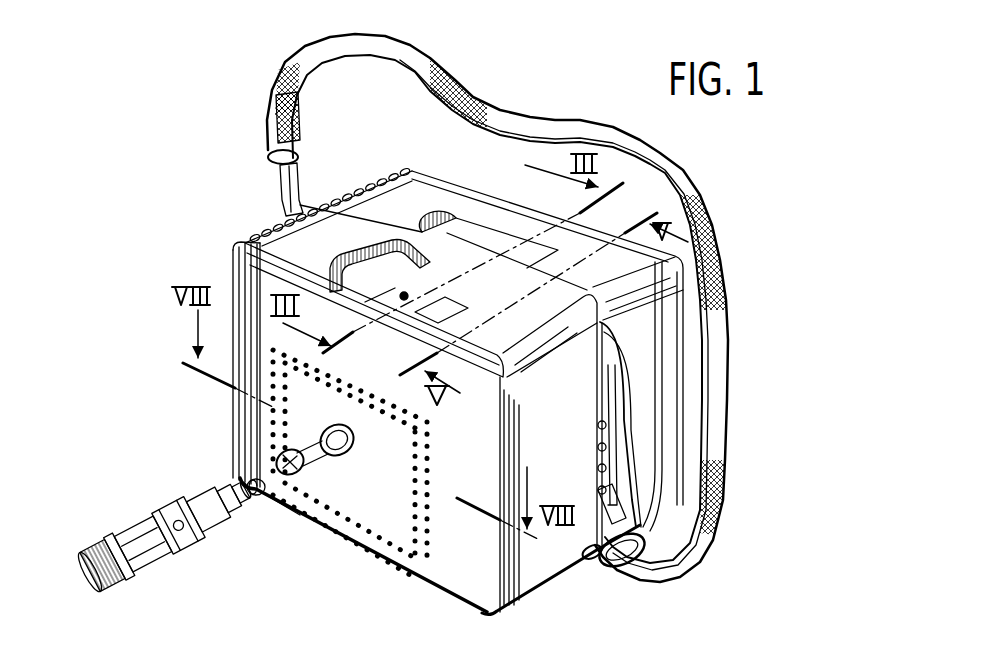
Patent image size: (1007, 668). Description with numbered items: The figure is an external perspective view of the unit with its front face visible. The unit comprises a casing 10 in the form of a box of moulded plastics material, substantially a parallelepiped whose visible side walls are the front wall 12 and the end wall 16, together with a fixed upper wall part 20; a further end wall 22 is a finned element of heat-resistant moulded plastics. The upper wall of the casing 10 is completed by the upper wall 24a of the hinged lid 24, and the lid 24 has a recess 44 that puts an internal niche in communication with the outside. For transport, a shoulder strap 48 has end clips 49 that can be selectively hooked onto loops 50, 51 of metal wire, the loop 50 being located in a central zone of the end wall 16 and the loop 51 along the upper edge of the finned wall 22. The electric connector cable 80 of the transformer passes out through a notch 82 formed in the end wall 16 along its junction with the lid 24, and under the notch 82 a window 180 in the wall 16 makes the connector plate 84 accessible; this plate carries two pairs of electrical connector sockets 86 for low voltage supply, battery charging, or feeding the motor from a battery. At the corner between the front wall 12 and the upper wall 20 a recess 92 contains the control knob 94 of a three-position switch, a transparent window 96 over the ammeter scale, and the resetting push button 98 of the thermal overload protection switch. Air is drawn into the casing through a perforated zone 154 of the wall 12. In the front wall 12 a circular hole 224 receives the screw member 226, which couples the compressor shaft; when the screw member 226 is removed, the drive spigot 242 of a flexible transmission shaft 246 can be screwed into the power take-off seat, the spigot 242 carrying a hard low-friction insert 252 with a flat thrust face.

The casing 10 is at (550, 587).
The front wall 12 is at (450, 574).
The end wall 16 is at (715, 475).
The fixed upper wall part 20 is at (345, 228).
The finned end wall 22 is at (232, 263).
The hinged lid 24 is at (601, 226).
The upper wall of the hinged lid 24a is at (540, 227).
The recess 44 is at (490, 240).
The shoulder strap 48 is at (712, 240).
The end clips 49 is at (275, 188).
The loop 50 is at (643, 473).
The loop 51 is at (277, 215).
The electric connector cable 80 is at (652, 487).
The notch 82 is at (617, 335).
The connector plate 84 is at (607, 433).
The electrical connector sockets 86 is at (598, 440).
The recess 92 is at (388, 298).
The control knob 94 is at (373, 292).
The transparent window 96 is at (437, 312).
The resetting push button 98 is at (407, 293).
The perforated zone 154 is at (373, 547).
The window 180 is at (620, 362).
The circular hole 224 is at (222, 483).
The screw member 226 is at (296, 490).
The drive spigot 242 is at (218, 518).
The flexible transmission shaft 246 is at (88, 578).
The insert 252 is at (270, 482).